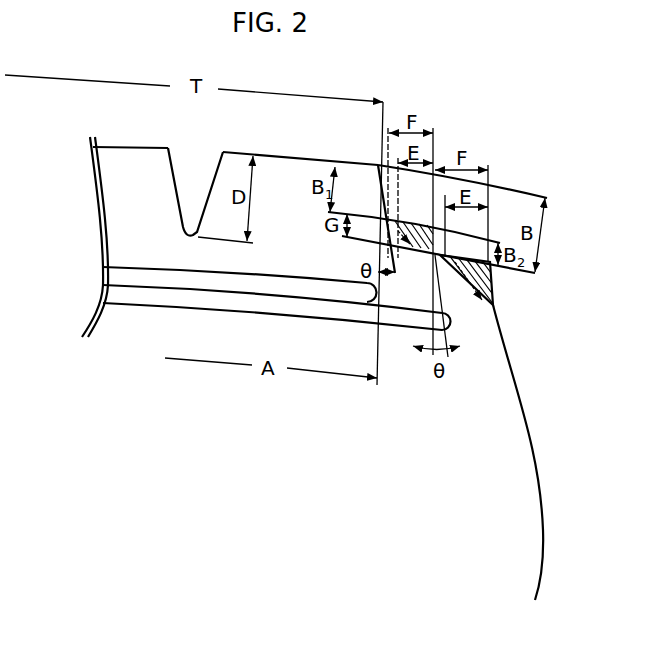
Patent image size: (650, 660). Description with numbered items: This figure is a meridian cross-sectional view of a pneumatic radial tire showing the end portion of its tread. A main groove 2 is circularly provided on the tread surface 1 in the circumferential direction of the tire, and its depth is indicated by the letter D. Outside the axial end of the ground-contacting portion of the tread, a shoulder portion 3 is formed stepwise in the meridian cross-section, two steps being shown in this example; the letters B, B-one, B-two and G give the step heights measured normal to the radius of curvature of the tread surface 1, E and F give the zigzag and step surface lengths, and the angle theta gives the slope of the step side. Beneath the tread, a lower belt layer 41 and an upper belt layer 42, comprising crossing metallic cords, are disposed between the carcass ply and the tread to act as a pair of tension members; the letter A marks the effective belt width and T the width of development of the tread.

The tread surface 1 is at (309, 151).
The main groove 2 is at (202, 182).
The shoulder portion 3 is at (462, 138).
The lower belt layer 41 is at (176, 300).
The upper belt layer 42 is at (123, 280).